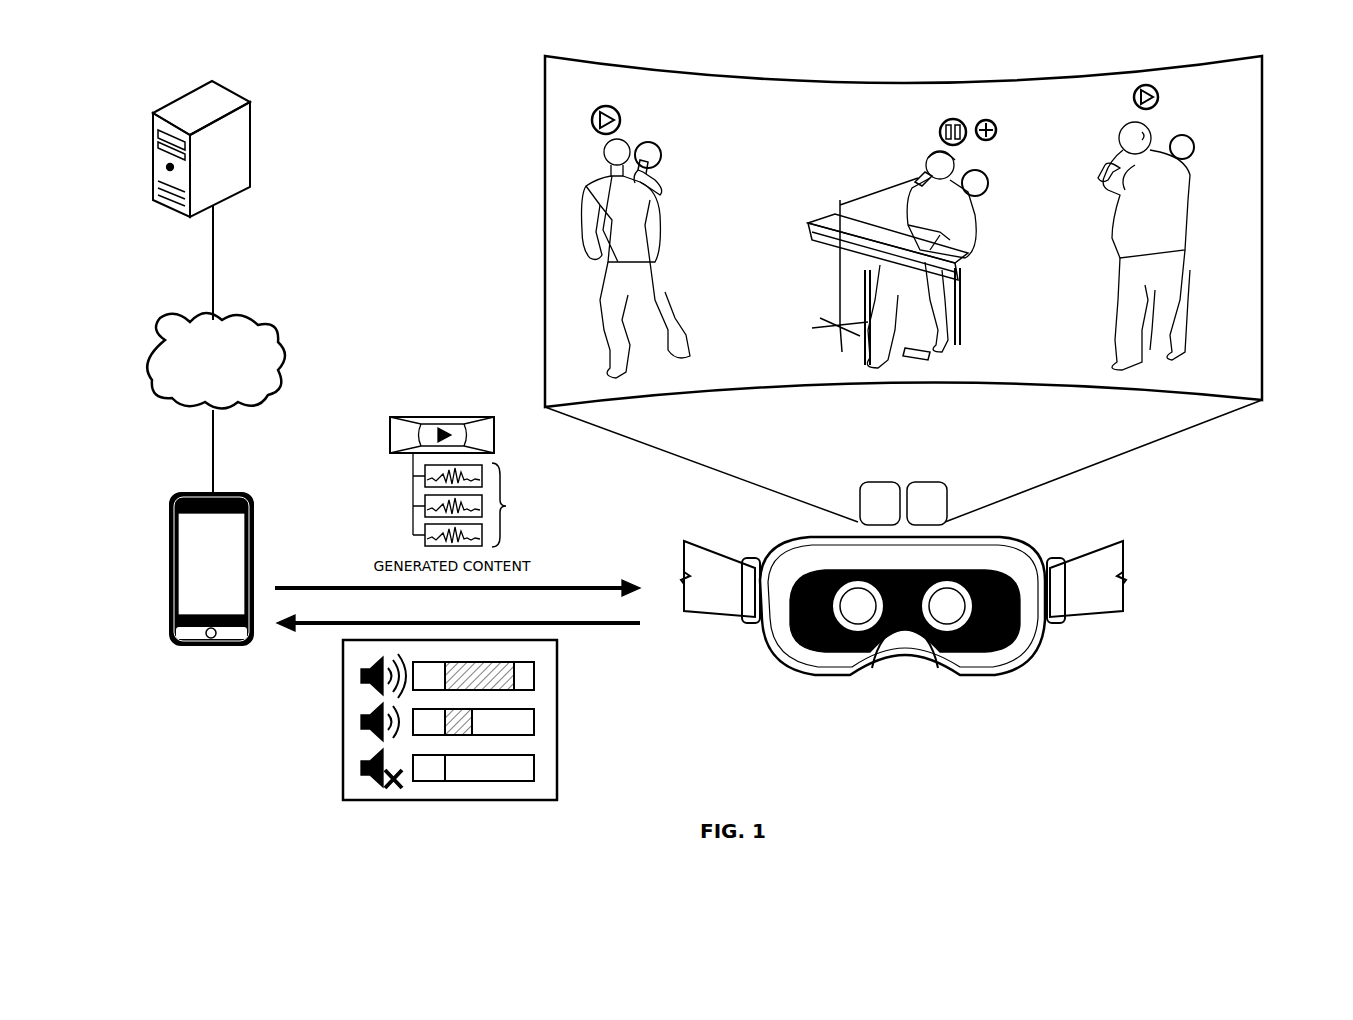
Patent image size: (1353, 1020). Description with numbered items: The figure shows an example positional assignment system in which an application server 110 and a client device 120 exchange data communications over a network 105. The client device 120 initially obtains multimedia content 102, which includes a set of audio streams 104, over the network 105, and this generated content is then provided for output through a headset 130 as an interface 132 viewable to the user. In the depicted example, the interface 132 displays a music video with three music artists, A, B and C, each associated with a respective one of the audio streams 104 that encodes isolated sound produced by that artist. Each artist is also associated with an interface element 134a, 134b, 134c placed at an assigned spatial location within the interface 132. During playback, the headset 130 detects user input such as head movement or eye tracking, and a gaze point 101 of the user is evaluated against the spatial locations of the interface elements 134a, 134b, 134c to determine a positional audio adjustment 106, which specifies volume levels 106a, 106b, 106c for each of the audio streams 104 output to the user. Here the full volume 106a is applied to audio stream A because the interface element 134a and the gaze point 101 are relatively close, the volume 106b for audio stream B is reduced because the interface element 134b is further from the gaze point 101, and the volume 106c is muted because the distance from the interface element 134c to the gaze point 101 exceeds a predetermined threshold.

The gaze point 101 is at (985, 120).
The multimedia content 102 is at (438, 417).
The audio streams 104 is at (481, 500).
The network 105 is at (276, 340).
The positional audio adjustment 106 is at (448, 742).
The full volume 106a is at (534, 668).
The volume 106b is at (534, 716).
The volume 106c is at (534, 762).
The application server 110 is at (170, 98).
The client device 120 is at (243, 493).
The headset 130 is at (1020, 665).
The interface 132 is at (905, 82).
The interface element 134a is at (605, 106).
The interface element 134b is at (955, 119).
The interface element 134c is at (1158, 100).